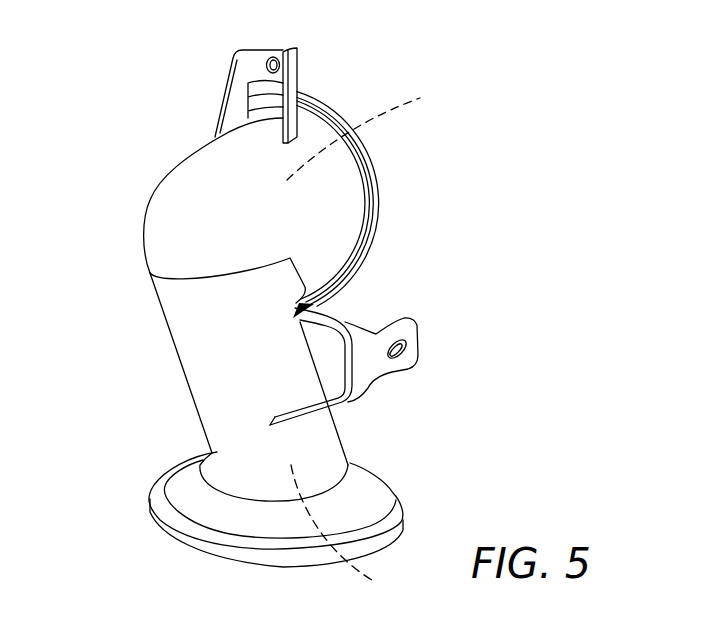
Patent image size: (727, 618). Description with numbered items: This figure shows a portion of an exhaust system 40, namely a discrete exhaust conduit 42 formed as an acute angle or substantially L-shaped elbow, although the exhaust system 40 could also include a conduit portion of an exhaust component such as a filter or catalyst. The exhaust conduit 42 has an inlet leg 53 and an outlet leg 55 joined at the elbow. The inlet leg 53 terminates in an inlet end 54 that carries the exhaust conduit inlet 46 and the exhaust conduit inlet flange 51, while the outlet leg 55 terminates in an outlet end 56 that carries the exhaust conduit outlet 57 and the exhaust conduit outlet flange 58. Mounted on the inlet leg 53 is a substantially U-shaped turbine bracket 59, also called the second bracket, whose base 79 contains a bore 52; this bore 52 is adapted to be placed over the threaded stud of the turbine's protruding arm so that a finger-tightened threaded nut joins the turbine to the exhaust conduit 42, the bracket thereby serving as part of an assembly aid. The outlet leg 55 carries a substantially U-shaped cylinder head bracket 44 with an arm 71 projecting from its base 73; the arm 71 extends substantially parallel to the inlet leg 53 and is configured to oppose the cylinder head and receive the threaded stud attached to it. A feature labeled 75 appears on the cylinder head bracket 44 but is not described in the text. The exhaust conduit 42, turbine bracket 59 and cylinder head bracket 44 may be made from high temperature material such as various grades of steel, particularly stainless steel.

The exhaust system 40 is at (174, 410).
The exhaust conduit 42 is at (172, 362).
The cylinder head bracket 44 is at (392, 382).
The exhaust conduit inlet 46 is at (370, 133).
The exhaust conduit inlet flange 51 is at (371, 160).
The bore 52 is at (277, 57).
The inlet leg 53 is at (322, 204).
The inlet end 54 is at (338, 178).
The outlet leg 55 is at (208, 330).
The outlet end 56 is at (175, 536).
The exhaust conduit outlet 57 is at (345, 529).
The exhaust conduit outlet flange 58 is at (400, 510).
The turbine bracket 59 is at (312, 77).
The arm 71 is at (407, 319).
The base 73 is at (357, 388).
The slot 75 is at (405, 355).
The base 79 is at (252, 72).